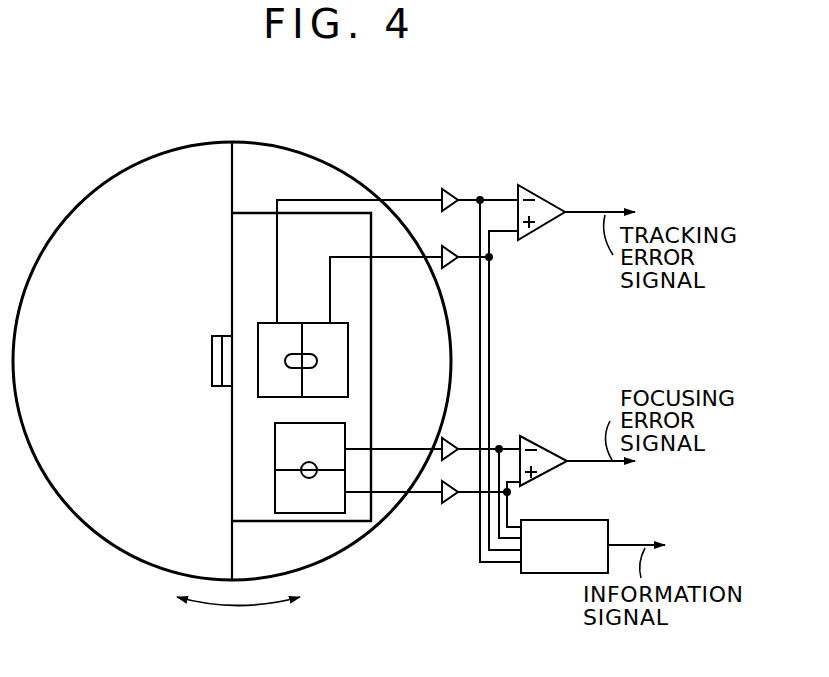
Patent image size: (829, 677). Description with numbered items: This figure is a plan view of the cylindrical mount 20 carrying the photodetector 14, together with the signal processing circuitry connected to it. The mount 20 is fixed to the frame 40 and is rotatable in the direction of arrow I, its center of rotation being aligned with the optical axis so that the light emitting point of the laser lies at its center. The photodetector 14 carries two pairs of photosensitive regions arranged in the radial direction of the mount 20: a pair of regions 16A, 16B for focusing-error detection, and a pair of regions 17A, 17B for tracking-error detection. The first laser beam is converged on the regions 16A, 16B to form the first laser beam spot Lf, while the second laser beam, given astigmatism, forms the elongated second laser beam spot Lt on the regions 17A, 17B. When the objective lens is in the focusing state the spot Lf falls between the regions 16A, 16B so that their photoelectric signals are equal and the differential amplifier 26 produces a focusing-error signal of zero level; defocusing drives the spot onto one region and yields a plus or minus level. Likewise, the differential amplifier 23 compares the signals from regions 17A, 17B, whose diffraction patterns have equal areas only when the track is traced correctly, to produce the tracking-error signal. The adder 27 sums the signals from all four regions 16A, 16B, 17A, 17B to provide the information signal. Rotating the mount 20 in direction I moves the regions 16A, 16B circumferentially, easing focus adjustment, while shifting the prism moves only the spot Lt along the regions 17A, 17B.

The mount 20 is at (318, 158).
The photodetector 14 is at (345, 521).
The photosensitive region 17A is at (340, 356).
The photosensitive region 17B is at (262, 330).
The photosensitive region 16A is at (333, 444).
The photosensitive region 16B is at (283, 492).
The frame 40 is at (305, 311).
The differential amplifier 23 is at (541, 201).
The differential amplifier 26 is at (545, 446).
The adder 27 is at (578, 520).
The second laser beam spot Lt is at (290, 367).
The first laser beam spot Lf is at (300, 466).
The direction of rotation I is at (232, 606).